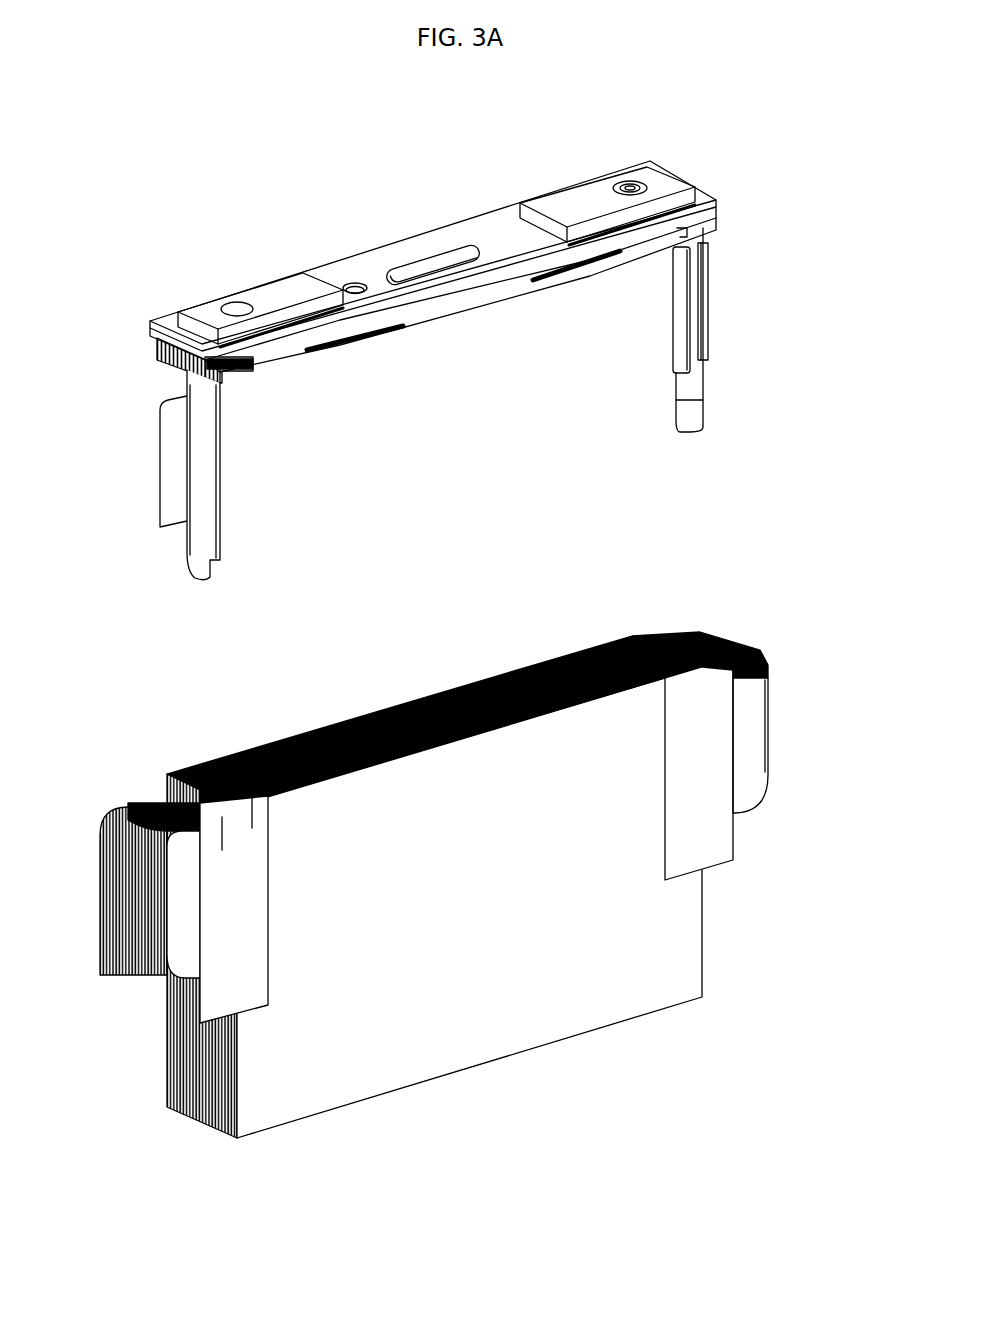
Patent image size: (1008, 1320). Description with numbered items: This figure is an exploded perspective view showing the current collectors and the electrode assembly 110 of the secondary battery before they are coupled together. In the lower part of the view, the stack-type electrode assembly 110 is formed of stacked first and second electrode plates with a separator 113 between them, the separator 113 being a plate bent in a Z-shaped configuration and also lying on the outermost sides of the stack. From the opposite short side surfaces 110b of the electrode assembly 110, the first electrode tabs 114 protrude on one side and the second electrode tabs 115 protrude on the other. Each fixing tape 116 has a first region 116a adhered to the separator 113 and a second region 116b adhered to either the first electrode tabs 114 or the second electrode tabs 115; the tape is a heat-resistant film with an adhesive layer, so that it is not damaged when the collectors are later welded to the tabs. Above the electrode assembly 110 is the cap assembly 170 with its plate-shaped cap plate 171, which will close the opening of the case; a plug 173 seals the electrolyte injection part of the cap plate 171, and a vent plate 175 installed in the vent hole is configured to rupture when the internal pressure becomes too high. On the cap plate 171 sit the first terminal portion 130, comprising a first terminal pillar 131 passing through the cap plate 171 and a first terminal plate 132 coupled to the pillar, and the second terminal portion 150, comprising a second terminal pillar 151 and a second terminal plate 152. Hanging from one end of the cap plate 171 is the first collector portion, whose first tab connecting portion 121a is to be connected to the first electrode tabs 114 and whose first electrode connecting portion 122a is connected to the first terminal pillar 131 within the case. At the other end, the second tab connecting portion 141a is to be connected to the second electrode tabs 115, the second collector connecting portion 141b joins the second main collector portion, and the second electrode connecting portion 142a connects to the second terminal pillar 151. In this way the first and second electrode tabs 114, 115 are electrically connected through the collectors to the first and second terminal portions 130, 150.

The electrode assembly 110 is at (462, 862).
The short side surfaces 110b is at (200, 1123).
The separator 113 is at (475, 1038).
The first electrode tabs 114 is at (150, 973).
The second electrode tabs 115 is at (758, 740).
The fixing tape 116 is at (419, 694).
The first region 116a is at (685, 690).
The second region 116b is at (570, 555).
The first tab connecting portion 121a is at (170, 458).
The first electrode connecting portion 122a is at (207, 488).
The first terminal portion 130 is at (260, 257).
The first terminal pillar 131 is at (215, 267).
The first terminal plate 132 is at (281, 290).
The second tab connecting portion 141a is at (708, 307).
The second collector connecting portion 141b is at (683, 329).
The second electrode connecting portion 142a is at (677, 383).
The second terminal portion 150 is at (606, 151).
The second terminal pillar 151 is at (617, 152).
The second terminal plate 152 is at (570, 197).
The cap assembly 170 is at (433, 243).
The cap plate 171 is at (500, 230).
The plug 173 is at (351, 284).
The vent plate 175 is at (428, 265).